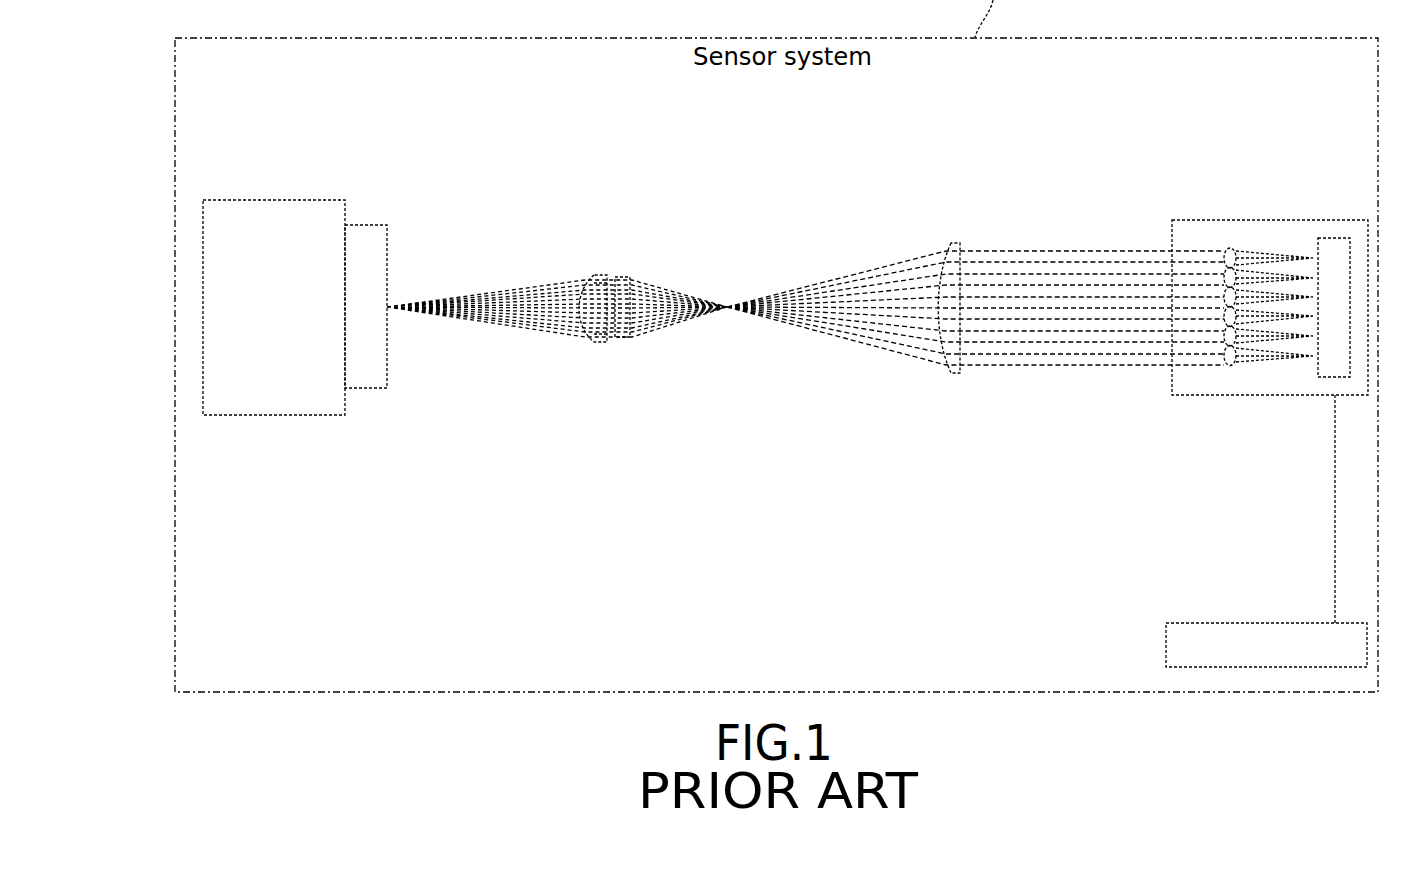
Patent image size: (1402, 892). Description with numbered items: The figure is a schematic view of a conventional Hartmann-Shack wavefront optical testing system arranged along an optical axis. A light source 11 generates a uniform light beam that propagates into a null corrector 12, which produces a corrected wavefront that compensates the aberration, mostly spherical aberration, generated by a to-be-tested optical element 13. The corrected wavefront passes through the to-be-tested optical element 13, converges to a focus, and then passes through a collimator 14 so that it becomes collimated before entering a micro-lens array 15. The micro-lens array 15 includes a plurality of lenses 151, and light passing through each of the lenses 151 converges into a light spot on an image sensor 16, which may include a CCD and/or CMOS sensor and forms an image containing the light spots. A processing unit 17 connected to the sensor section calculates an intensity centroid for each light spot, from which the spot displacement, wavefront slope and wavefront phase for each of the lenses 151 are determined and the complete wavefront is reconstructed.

The light source 11 is at (276, 200).
The null corrector 12 is at (600, 273).
The to-be-tested optical element 13 is at (627, 276).
The collimator 14 is at (950, 242).
The micro-lens array 15 is at (1220, 309).
The lens 151 is at (1227, 343).
The image sensor 16 is at (1338, 237).
The processing unit 17 is at (1166, 643).